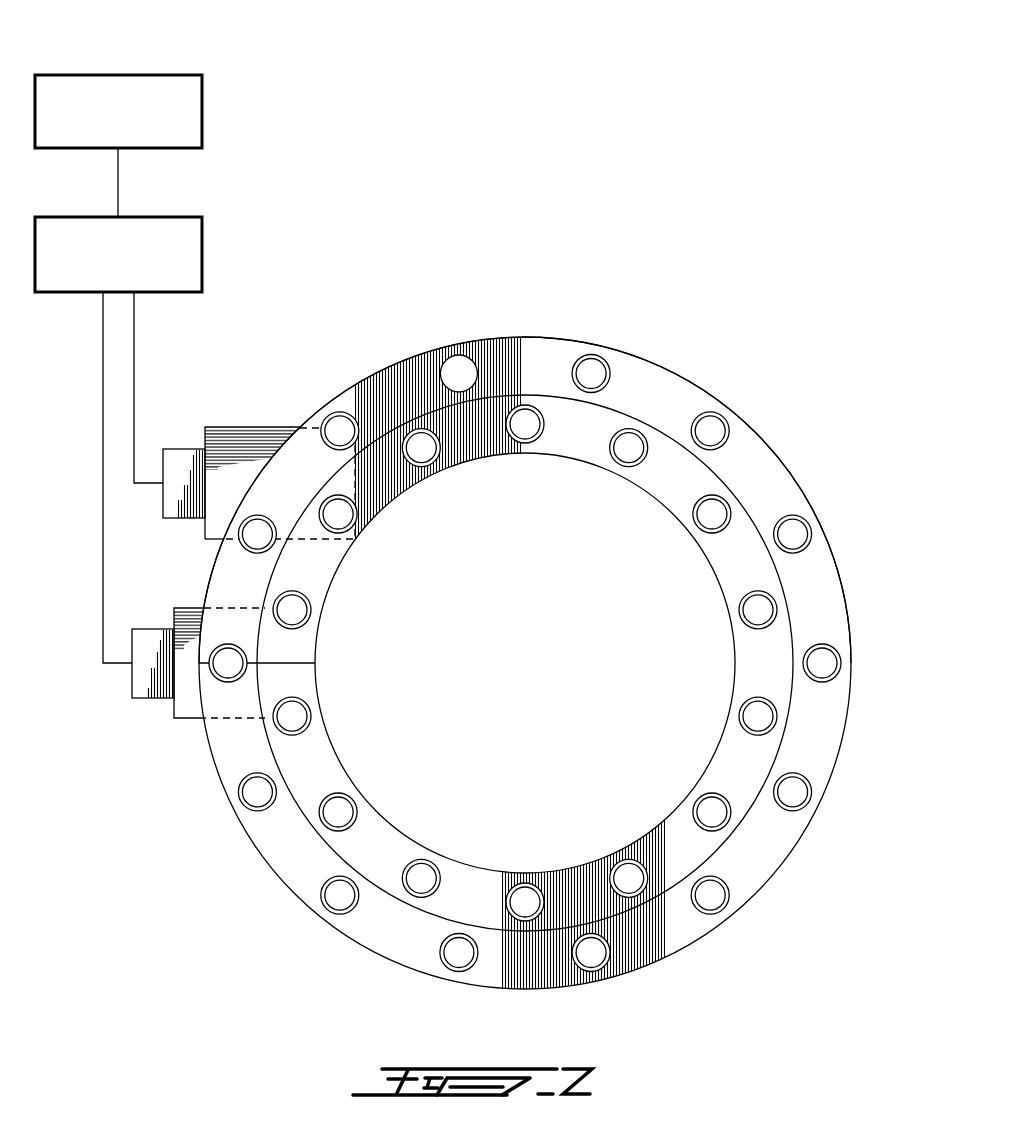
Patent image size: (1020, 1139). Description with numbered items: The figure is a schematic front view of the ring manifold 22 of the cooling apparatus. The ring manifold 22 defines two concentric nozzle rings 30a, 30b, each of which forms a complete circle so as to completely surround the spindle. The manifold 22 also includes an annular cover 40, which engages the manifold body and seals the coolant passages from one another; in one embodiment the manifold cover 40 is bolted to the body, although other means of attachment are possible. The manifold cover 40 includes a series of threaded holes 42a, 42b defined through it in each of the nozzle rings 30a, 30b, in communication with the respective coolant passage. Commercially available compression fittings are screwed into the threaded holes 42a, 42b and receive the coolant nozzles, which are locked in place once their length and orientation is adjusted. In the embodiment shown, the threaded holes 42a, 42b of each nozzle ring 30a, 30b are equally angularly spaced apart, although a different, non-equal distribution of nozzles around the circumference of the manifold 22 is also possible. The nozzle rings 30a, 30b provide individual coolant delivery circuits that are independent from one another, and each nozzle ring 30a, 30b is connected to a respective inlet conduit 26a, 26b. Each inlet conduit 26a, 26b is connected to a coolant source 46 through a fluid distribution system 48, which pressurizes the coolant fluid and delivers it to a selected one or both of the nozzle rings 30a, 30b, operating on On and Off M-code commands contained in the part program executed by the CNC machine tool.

The ring manifold 22 is at (666, 360).
The inlet conduit 26a is at (236, 444).
The inlet conduit 26b is at (189, 700).
The nozzle ring 30a is at (696, 482).
The nozzle ring 30b is at (777, 497).
The annular cover 40 is at (813, 593).
The threaded holes 42a is at (292, 610).
The threaded holes 42b is at (592, 372).
The coolant source 46 is at (202, 112).
The fluid distribution system 48 is at (202, 253).